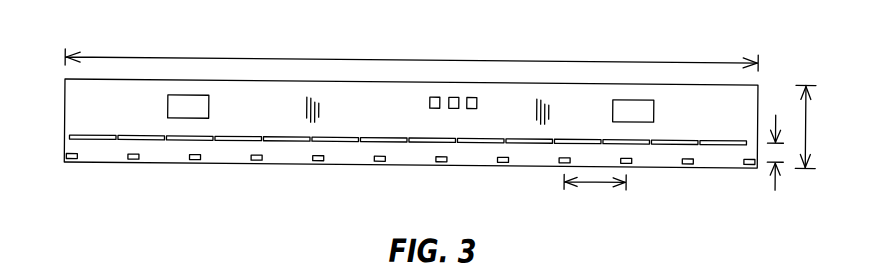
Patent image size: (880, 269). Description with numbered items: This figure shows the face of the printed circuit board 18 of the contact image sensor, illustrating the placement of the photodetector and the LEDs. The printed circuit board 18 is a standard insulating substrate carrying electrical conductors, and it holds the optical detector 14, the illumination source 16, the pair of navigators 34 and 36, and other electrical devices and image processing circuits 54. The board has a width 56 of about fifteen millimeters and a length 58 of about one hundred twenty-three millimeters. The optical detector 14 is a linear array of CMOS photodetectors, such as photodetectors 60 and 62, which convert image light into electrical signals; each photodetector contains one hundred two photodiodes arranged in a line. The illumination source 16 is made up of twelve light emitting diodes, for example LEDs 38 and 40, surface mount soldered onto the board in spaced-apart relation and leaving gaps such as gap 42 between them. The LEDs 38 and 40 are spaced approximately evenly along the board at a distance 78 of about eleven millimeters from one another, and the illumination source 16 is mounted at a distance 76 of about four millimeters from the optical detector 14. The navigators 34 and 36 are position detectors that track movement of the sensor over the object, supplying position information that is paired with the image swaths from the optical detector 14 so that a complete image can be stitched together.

The optical detector 14 is at (384, 115).
The illumination source 16 is at (388, 185).
The printed circuit board 18 is at (65, 80).
The navigator 34 is at (209, 105).
The navigator 36 is at (654, 106).
The light emitting diode 38 is at (72, 162).
The light emitting diode 40 is at (133, 162).
The gap 42 is at (103, 152).
The image processing circuits 54 is at (414, 98).
The width 56 is at (807, 134).
The length 58 is at (202, 56).
The CMOS photodetector 60 is at (98, 134).
The CMOS photodetector 62 is at (145, 134).
The distance 76 is at (774, 174).
The distance 78 is at (591, 178).